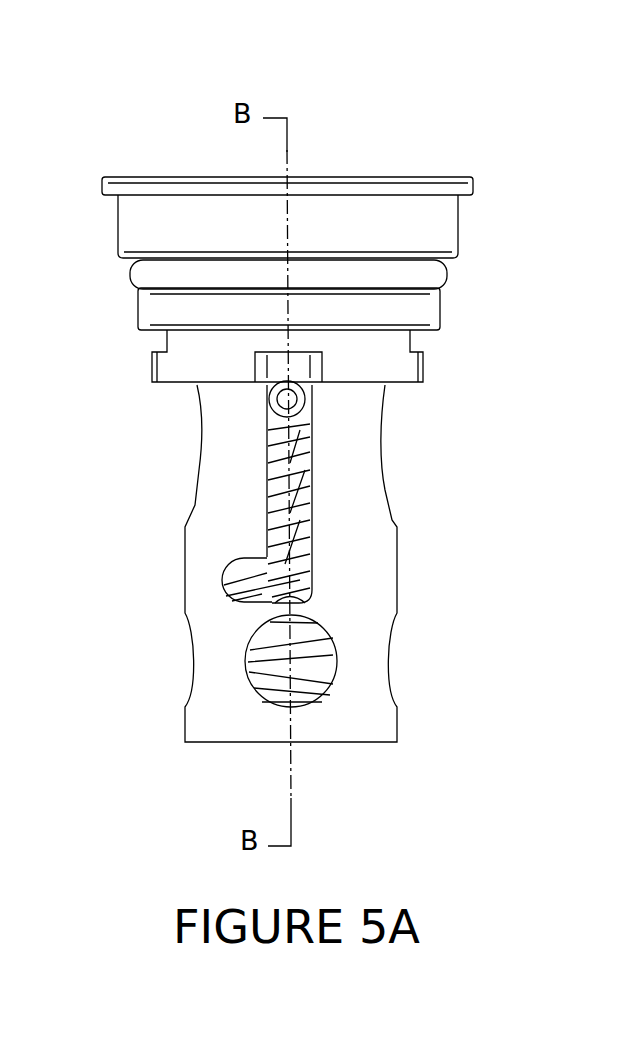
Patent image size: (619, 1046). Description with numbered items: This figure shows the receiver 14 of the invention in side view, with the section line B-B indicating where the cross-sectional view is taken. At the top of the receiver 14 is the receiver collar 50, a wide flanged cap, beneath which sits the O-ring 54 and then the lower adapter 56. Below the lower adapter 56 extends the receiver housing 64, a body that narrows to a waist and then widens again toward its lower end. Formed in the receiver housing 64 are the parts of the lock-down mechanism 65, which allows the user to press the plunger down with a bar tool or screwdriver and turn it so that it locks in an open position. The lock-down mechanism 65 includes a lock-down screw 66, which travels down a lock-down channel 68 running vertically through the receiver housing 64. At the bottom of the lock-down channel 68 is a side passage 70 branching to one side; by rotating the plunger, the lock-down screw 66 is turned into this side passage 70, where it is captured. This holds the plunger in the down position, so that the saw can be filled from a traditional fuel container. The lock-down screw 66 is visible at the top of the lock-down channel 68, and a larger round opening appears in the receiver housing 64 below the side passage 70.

The receiver 14 is at (121, 149).
The receiver collar 50 is at (443, 234).
The O-ring 54 is at (447, 270).
The lower adapter 56 is at (388, 358).
The receiver housing 64 is at (199, 627).
The lock-down mechanism 65 is at (422, 494).
The lock-down screw 66 is at (305, 408).
The lock-down channel 68 is at (303, 521).
The side passage 70 is at (247, 596).